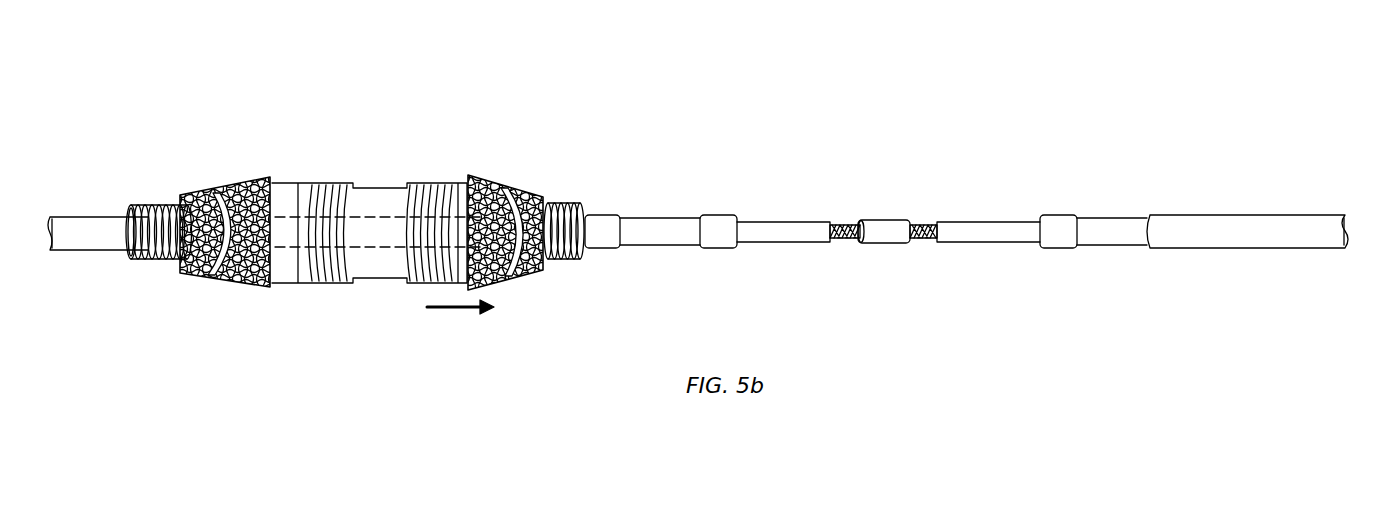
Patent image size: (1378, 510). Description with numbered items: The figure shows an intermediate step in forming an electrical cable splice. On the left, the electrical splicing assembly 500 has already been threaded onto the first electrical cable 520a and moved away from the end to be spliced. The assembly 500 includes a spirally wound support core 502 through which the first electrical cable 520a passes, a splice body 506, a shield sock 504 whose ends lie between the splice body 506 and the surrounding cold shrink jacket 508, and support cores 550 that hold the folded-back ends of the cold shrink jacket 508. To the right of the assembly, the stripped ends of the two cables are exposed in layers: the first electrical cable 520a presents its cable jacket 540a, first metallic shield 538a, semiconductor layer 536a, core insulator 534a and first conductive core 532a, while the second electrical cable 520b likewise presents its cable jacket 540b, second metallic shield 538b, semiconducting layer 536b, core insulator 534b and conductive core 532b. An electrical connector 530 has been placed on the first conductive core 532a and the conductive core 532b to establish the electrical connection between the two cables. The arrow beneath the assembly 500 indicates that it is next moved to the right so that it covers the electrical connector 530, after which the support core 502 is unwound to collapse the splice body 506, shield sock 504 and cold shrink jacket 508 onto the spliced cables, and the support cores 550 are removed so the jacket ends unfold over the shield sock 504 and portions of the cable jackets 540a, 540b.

The electrical splicing assembly 500 is at (258, 78).
The support core 502 is at (128, 218).
The shield sock 504 is at (230, 178).
The splice body 506 is at (188, 200).
The cold shrink jacket 508 is at (364, 190).
The support cores 550 is at (327, 180).
The first electrical cable 520a is at (102, 262).
The second electrical cable 520b is at (1305, 262).
The electrical connector 530 is at (892, 232).
The first conductive core 532a is at (843, 230).
The conductive core 532b is at (923, 228).
The core insulator 534a is at (793, 232).
The core insulator 534b is at (982, 232).
The semiconductor layer 536a is at (717, 226).
The semiconducting layer 536b is at (1062, 228).
The first metallic shield 538a is at (663, 235).
The second metallic shield 538b is at (1120, 232).
The cable jacket 540a is at (602, 225).
The cable jacket 540b is at (1227, 225).